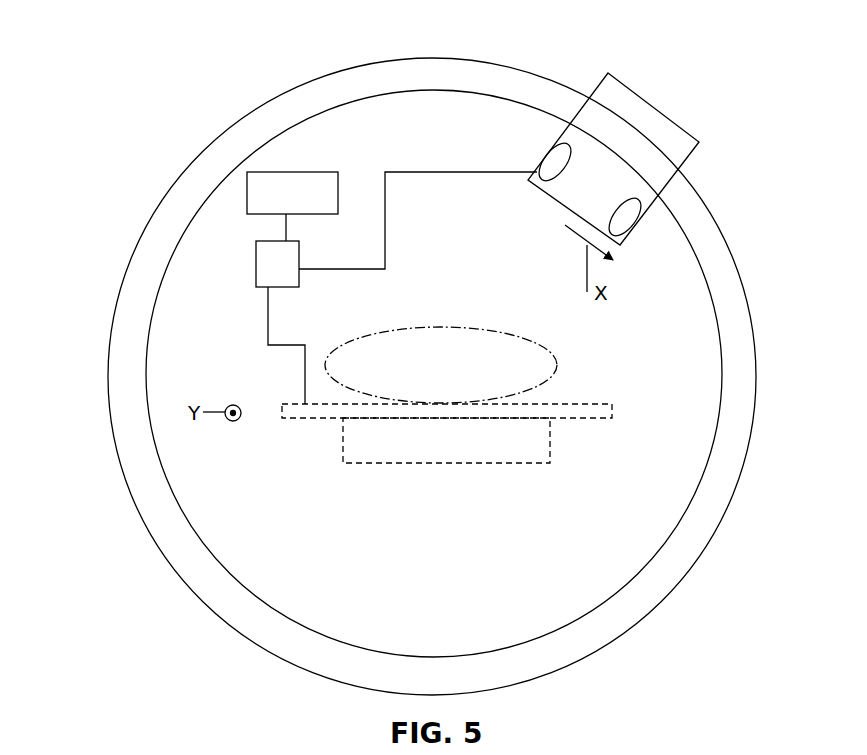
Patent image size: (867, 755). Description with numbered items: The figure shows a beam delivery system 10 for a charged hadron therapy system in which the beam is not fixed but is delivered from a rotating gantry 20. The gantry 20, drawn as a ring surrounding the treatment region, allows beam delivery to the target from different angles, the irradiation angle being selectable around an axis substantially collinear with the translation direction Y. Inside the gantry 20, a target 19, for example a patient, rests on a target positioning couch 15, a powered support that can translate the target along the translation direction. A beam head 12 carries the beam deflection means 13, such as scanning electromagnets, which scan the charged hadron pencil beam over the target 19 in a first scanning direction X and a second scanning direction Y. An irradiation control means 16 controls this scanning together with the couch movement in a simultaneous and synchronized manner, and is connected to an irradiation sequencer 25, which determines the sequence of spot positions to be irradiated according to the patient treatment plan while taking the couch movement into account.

The beam delivery system 10 is at (162, 128).
The print head / nozzle assembly 12 is at (673, 122).
The beam deflection means 13 is at (612, 226).
The target positioning couch 15 is at (612, 407).
The irradiation control means 16 is at (255, 285).
The target 19 is at (548, 353).
The gantry 20 is at (108, 388).
The irradiation sequencer 25 is at (287, 172).